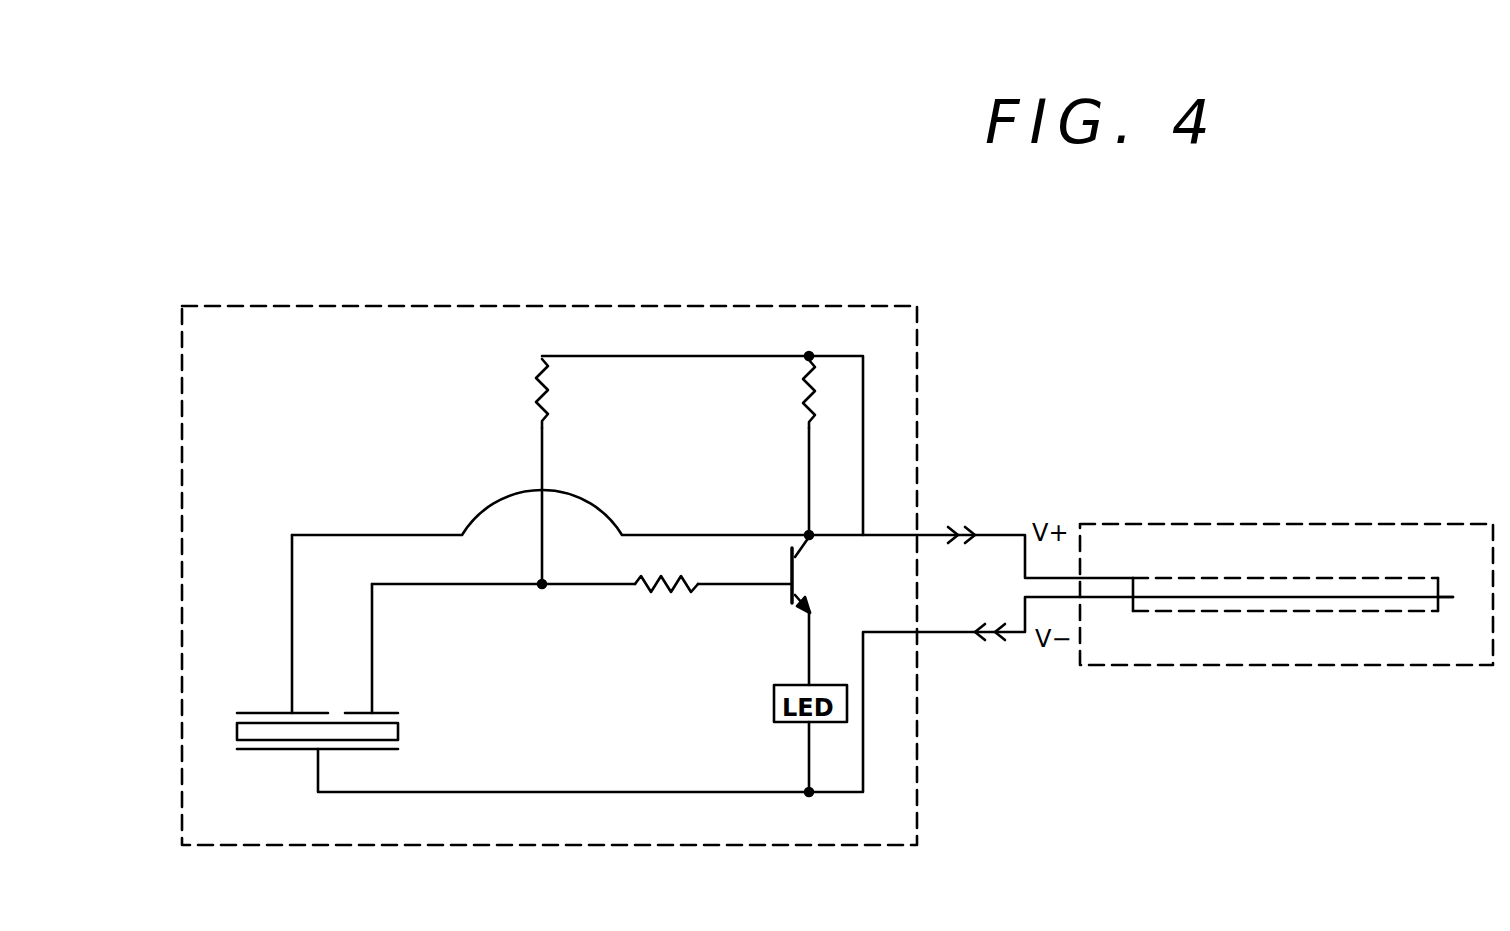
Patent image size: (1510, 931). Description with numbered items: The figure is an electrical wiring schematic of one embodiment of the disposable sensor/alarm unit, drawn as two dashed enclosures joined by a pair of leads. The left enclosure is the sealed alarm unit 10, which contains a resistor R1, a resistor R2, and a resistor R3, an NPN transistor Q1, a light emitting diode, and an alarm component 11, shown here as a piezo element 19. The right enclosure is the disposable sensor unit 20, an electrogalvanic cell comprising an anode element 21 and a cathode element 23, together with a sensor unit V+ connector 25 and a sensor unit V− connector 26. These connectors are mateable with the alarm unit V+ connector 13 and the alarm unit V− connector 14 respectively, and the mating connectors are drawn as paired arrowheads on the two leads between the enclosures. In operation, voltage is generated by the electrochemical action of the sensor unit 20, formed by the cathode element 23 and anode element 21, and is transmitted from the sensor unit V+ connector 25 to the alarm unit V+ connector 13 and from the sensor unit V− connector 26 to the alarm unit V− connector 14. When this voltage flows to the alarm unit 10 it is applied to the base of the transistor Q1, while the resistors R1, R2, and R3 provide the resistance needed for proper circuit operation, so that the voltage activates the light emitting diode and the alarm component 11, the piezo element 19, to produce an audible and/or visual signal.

The alarm unit 10 is at (296, 305).
The alarm component 11 is at (353, 693).
The piezo element 19 is at (402, 735).
The alarm unit V+ connector 13 is at (952, 530).
The alarm unit V− connector 14 is at (962, 637).
The sensor unit V+ connector 25 is at (990, 530).
The sensor unit V− connector 26 is at (1012, 640).
The disposable sensor unit 20 is at (1185, 524).
The cathode element 23 is at (1200, 577).
The anode element 21 is at (1458, 596).
The resistor R1 is at (536, 411).
The resistor R2 is at (800, 390).
The resistor R3 is at (676, 595).
The NPN transistor Q1 is at (799, 572).